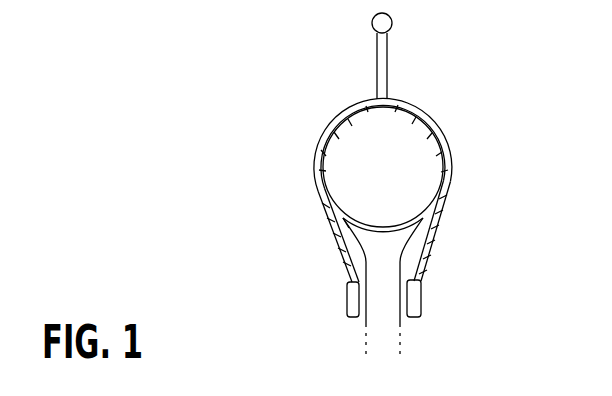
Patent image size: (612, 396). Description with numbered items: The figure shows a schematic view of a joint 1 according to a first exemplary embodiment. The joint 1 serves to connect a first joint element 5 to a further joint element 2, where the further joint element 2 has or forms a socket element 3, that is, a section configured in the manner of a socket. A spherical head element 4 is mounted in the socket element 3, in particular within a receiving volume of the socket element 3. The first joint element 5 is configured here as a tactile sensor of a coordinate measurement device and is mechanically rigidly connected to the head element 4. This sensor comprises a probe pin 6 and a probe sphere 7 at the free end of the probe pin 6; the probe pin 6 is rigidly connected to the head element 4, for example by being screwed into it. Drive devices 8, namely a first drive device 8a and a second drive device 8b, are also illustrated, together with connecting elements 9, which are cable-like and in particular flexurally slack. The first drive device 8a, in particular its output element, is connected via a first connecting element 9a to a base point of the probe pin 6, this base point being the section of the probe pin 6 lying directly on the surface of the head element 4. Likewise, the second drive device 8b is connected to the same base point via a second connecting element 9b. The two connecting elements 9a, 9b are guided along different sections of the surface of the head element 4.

The joint 1 is at (354, 284).
The further joint element 2 is at (408, 284).
The socket element 3 is at (433, 235).
The spherical head element 4 is at (420, 178).
The first joint element 5 is at (384, 66).
The probe pin 6 is at (376, 60).
The probe sphere 7 is at (393, 24).
The drive devices 8 is at (394, 321).
The first drive device 8a is at (347, 307).
The second drive device 8b is at (420, 310).
The connecting elements 9 is at (376, 185).
The first connecting element 9a is at (315, 163).
The second connecting element 9b is at (443, 133).